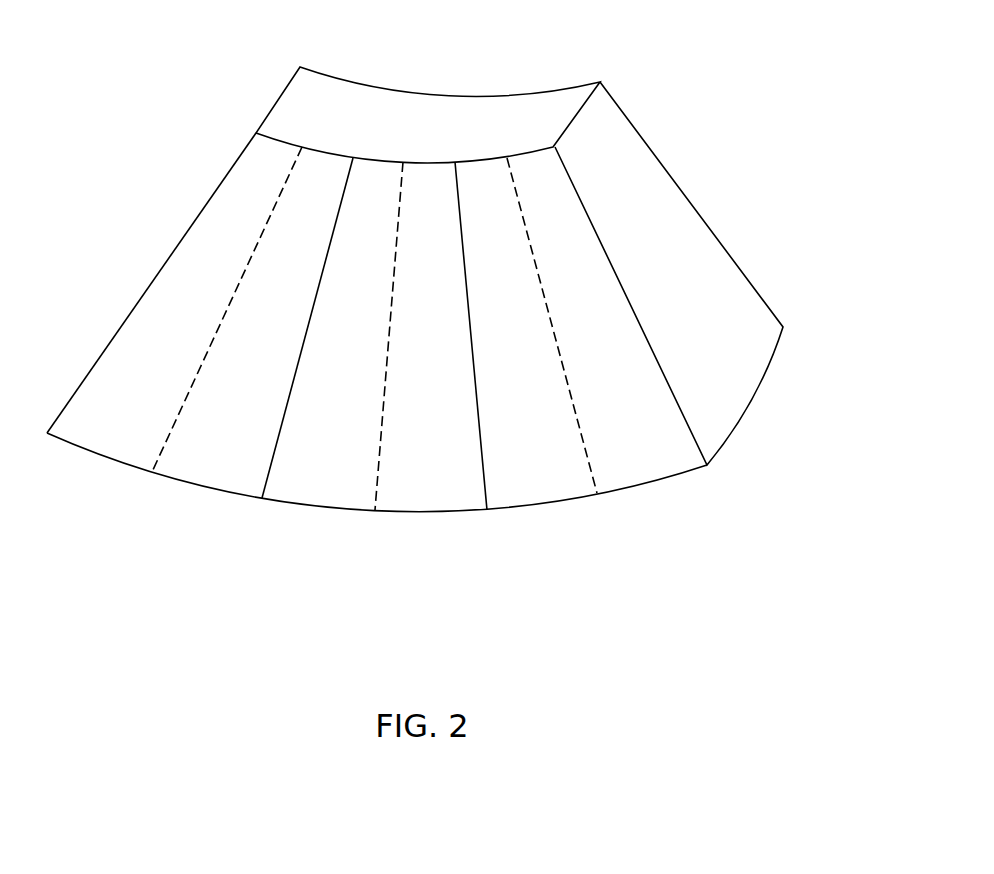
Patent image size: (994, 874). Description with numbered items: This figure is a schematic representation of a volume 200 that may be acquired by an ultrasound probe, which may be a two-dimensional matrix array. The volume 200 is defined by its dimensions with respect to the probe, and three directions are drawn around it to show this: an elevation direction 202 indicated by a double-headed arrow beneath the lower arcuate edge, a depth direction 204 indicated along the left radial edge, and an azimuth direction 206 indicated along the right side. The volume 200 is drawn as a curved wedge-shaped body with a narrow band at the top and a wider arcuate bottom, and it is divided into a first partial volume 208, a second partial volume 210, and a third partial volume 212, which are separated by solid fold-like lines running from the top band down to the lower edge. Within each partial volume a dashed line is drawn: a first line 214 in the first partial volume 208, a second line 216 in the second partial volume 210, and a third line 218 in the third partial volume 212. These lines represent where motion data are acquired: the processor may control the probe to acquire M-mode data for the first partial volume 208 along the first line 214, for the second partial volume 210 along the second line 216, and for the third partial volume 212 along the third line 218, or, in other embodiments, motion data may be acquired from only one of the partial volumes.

The volume 200 is at (610, 62).
The elevation direction 202 is at (488, 619).
The depth direction 204 is at (222, 117).
The azimuth direction 206 is at (800, 352).
The first partial volume 208 is at (97, 440).
The second partial volume 210 is at (298, 488).
The third partial volume 212 is at (558, 488).
The first line 214 is at (168, 450).
The second line 216 is at (385, 482).
The third line 218 is at (593, 462).